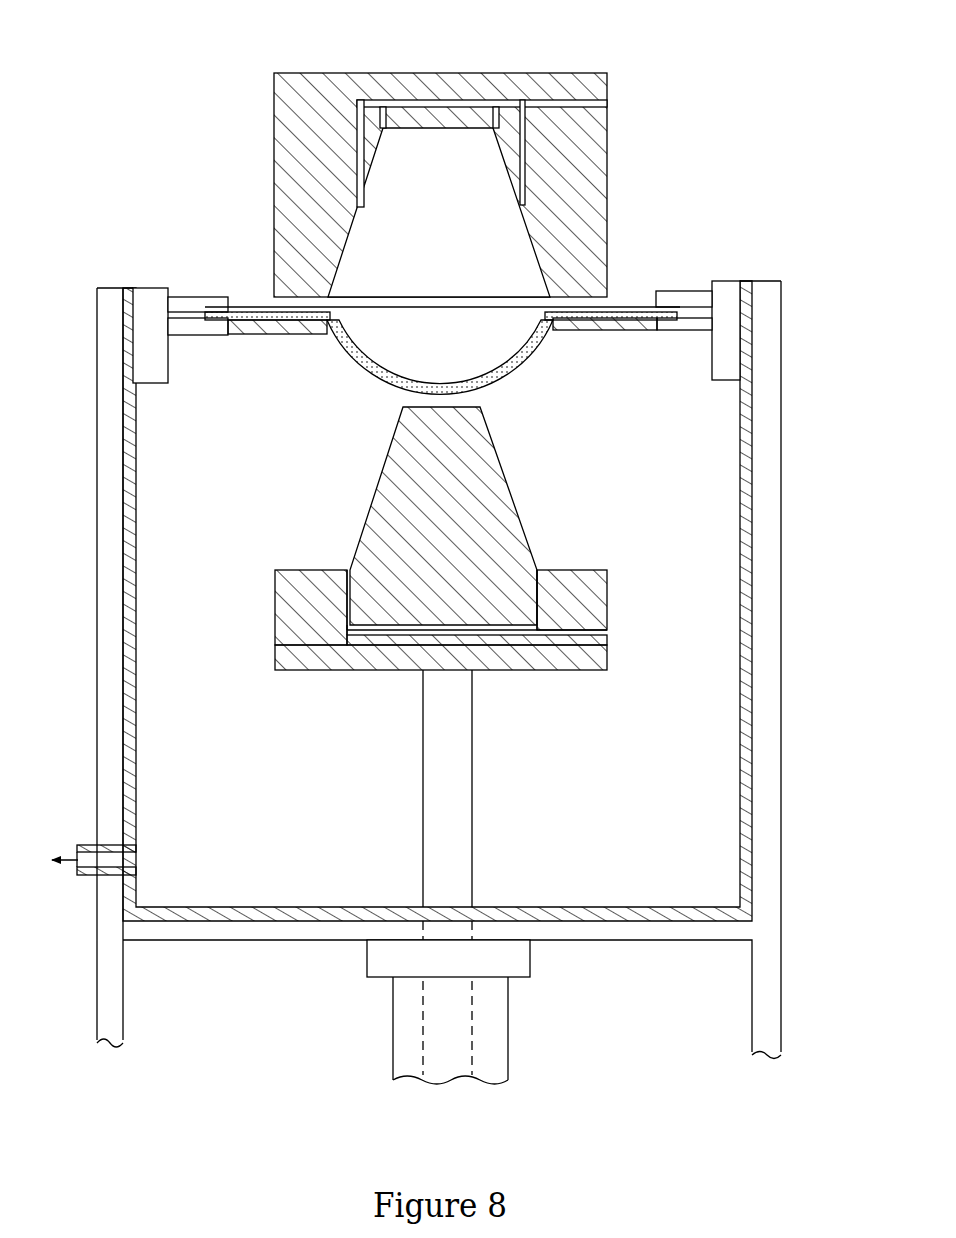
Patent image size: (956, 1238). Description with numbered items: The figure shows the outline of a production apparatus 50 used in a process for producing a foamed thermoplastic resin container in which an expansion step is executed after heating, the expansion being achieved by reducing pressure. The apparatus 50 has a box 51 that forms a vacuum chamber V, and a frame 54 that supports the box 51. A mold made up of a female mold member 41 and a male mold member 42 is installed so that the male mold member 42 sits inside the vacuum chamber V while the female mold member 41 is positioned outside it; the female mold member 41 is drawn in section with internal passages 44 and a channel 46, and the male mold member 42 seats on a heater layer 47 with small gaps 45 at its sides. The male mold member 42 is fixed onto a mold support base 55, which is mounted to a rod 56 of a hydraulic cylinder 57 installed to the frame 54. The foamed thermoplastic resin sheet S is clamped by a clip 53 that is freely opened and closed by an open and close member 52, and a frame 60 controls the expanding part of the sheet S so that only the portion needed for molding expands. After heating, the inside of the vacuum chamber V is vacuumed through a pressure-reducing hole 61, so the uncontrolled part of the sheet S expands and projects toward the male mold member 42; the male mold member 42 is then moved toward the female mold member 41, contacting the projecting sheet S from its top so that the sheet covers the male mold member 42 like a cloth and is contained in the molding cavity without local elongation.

The female mold member 41 is at (588, 190).
The male mold member 42 is at (497, 505).
The vent passages 44 is at (389, 136).
The gap 45 is at (343, 568).
The vent channel 46 is at (560, 100).
The heater 47 is at (585, 640).
The production apparatus 50 is at (790, 765).
The box 51 is at (745, 655).
The open and close member 52 is at (725, 345).
The clip 53 is at (683, 295).
The frame 54 is at (775, 862).
The mold support base 55 is at (345, 668).
The rod 56 is at (472, 785).
The hydraulic cylinder 57 is at (503, 1030).
The frame 60 is at (580, 378).
The pressure-reducing hole 61 is at (86, 845).
The foamed thermoplastic resin sheet S is at (378, 395).
The vacuum chamber V is at (297, 883).